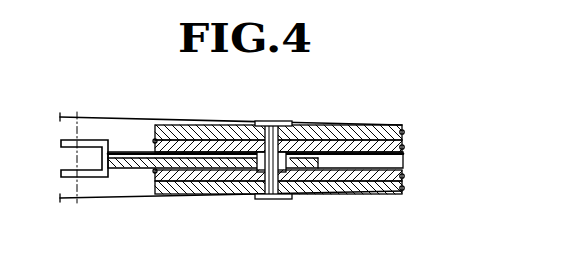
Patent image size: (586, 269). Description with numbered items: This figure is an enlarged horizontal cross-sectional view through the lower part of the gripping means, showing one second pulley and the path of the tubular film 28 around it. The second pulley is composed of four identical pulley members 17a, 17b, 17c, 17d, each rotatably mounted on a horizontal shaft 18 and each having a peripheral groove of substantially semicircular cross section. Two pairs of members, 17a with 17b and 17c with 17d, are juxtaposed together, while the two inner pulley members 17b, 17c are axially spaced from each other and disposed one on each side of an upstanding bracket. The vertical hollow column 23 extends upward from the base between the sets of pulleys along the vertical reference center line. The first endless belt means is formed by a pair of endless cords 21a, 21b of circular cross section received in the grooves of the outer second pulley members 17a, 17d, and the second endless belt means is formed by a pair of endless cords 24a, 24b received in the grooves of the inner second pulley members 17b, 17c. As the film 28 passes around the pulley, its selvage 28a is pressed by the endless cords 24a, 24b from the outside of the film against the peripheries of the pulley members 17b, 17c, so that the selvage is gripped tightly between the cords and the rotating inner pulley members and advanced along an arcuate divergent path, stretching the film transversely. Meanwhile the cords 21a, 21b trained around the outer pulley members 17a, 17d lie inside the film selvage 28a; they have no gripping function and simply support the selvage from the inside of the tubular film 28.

The tubular film 28 is at (103, 117).
The film selvage 28a is at (404, 158).
The vertical hollow column 23 is at (85, 178).
The outer second pulley member 17a is at (178, 188).
The inner second pulley member 17b is at (210, 176).
The inner second pulley member 17c is at (183, 131).
The outer second pulley member 17d is at (218, 140).
The horizontal shaft 18 is at (276, 124).
The first endless cord 21a is at (403, 193).
The first endless cord 21b is at (404, 130).
The second endless cord 24a is at (404, 176).
The second endless cord 24b is at (404, 146).